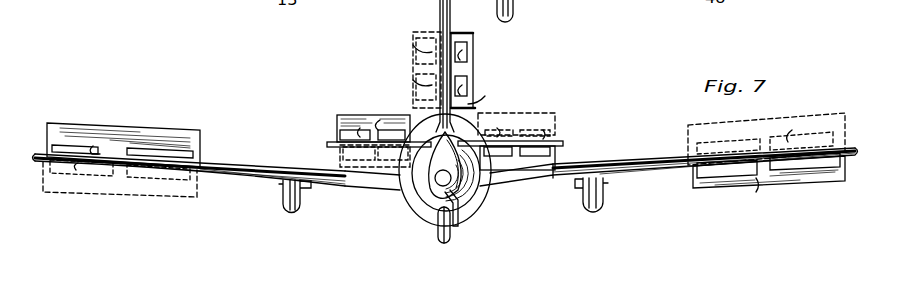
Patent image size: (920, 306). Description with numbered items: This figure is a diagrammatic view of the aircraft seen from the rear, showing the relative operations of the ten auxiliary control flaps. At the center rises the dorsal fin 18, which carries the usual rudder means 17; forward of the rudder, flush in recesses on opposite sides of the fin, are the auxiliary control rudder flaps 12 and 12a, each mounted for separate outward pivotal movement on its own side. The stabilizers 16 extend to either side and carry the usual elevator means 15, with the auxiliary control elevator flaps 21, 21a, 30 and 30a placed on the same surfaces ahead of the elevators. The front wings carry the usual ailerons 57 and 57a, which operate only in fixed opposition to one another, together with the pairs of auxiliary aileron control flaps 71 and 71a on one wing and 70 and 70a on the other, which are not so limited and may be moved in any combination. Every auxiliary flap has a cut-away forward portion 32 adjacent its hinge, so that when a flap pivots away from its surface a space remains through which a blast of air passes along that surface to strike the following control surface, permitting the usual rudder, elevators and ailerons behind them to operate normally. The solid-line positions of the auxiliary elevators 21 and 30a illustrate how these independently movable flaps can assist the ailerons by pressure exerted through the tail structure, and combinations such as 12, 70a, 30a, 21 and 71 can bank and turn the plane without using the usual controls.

The auxiliary control flap 12 is at (413, 60).
The auxiliary control rudder flap 12a is at (471, 60).
The elevator means 15 is at (410, 197).
The stabilizers 16 is at (327, 144).
The rudder means 17 is at (487, 93).
The dorsal fin 18 is at (450, 9).
The auxiliary control elevator flap 21 is at (362, 114).
The auxiliary control elevator flap 21a is at (350, 167).
The auxiliary control elevator flap 30 is at (512, 116).
The auxiliary control elevator flap 30a is at (539, 165).
The cut-away forward portion 32 is at (93, 146).
The aileron 57 is at (858, 152).
The aileron 57a is at (65, 163).
The auxiliary aileron control flap 70 is at (805, 111).
The auxiliary aileron control flap 70a is at (810, 180).
The auxiliary aileron control flap 71 is at (118, 130).
The auxiliary aileron control flap 71a is at (193, 190).